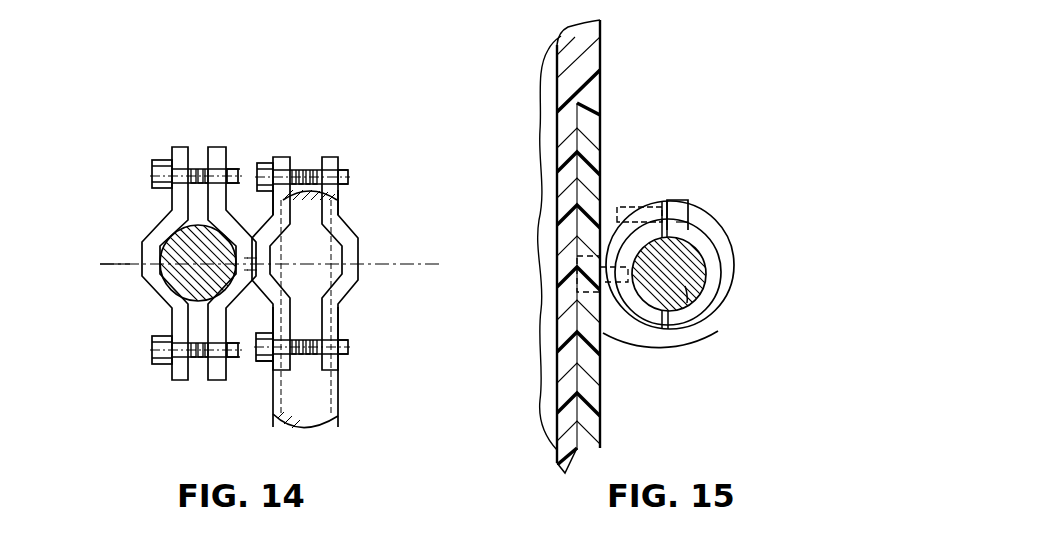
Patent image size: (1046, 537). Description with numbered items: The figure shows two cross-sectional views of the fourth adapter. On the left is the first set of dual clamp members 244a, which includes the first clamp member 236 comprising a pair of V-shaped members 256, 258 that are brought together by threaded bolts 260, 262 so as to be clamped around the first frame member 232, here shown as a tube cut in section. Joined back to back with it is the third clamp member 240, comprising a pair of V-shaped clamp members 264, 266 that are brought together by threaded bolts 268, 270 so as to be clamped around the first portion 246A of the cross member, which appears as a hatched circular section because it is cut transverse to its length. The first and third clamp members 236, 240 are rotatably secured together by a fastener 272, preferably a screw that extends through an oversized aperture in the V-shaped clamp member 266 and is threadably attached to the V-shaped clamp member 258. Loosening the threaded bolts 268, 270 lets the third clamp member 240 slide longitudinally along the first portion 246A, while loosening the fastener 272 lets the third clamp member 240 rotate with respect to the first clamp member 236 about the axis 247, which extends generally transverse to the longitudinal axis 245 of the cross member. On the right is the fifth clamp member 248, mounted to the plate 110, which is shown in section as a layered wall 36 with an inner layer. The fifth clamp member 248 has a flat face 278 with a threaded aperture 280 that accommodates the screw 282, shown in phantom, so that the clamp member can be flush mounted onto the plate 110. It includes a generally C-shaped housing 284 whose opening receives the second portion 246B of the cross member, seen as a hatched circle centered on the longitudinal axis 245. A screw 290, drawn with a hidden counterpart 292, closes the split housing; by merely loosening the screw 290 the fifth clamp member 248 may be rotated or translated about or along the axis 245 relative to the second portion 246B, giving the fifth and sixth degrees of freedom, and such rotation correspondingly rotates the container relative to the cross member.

In FIG. 14, the third clamp member 240 is at (140, 231).
In FIG. 14, the first set of dual clamp members 244a is at (355, 136).
In FIG. 14, the first clamp member 236 is at (374, 256).
In FIG. 14, the axis 247 is at (106, 262).
In FIG. 14, the first portion 246A is at (162, 284).
In FIG. 14, the V-shaped clamp member 264 is at (172, 379).
In FIG. 14, the V-shaped clamp member 266 is at (212, 382).
In FIG. 14, the threaded bolt 268 is at (152, 168).
In FIG. 14, the threaded bolt 270 is at (151, 353).
In FIG. 14, the fastener 272 is at (248, 200).
In FIG. 14, the first frame member 232 is at (340, 392).
In FIG. 14, the V-shaped member 256 is at (354, 291).
In FIG. 14, the V-shaped member 258 is at (265, 366).
In FIG. 14, the threaded bolt 260 is at (347, 177).
In FIG. 14, the threaded bolt 262 is at (348, 341).
In FIG. 15, the wall 36 is at (590, 66).
In FIG. 15, the plate 110 is at (592, 128).
In FIG. 15, the fifth clamp member 248 is at (750, 128).
In FIG. 15, the C-shaped housing 284 is at (707, 223).
In FIG. 15, the screw 290 is at (679, 199).
In FIG. 15, the hidden collar tab 292 is at (639, 205).
In FIG. 15, the threaded aperture 280 is at (613, 205).
In FIG. 15, the flat face 278 is at (631, 344).
In FIG. 15, the screw 282 is at (612, 283).
In FIG. 15, the longitudinal axis 245 is at (685, 285).
In FIG. 15, the second portion 246B is at (687, 303).